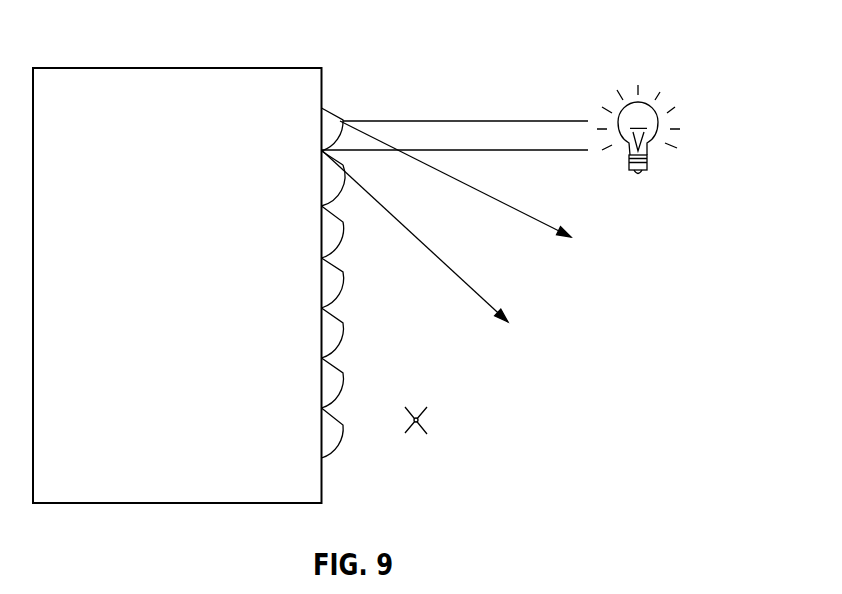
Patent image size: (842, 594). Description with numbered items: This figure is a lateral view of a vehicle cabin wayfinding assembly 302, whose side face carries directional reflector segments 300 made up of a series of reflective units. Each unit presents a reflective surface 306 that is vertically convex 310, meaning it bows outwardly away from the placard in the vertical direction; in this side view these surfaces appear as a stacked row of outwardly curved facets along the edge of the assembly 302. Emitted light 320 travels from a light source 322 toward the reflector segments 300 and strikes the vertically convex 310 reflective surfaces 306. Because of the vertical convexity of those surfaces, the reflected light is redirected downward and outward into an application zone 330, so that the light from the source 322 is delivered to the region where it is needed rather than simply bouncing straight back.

The directional reflector segments 300 is at (411, 254).
The vehicle cabin wayfinding assembly 302 is at (257, 42).
The reflective surfaces 306 is at (327, 140).
The vertically convex 310 is at (411, 269).
The emitted light 320 is at (515, 121).
The light source 322 is at (662, 132).
The application zone 330 is at (507, 265).